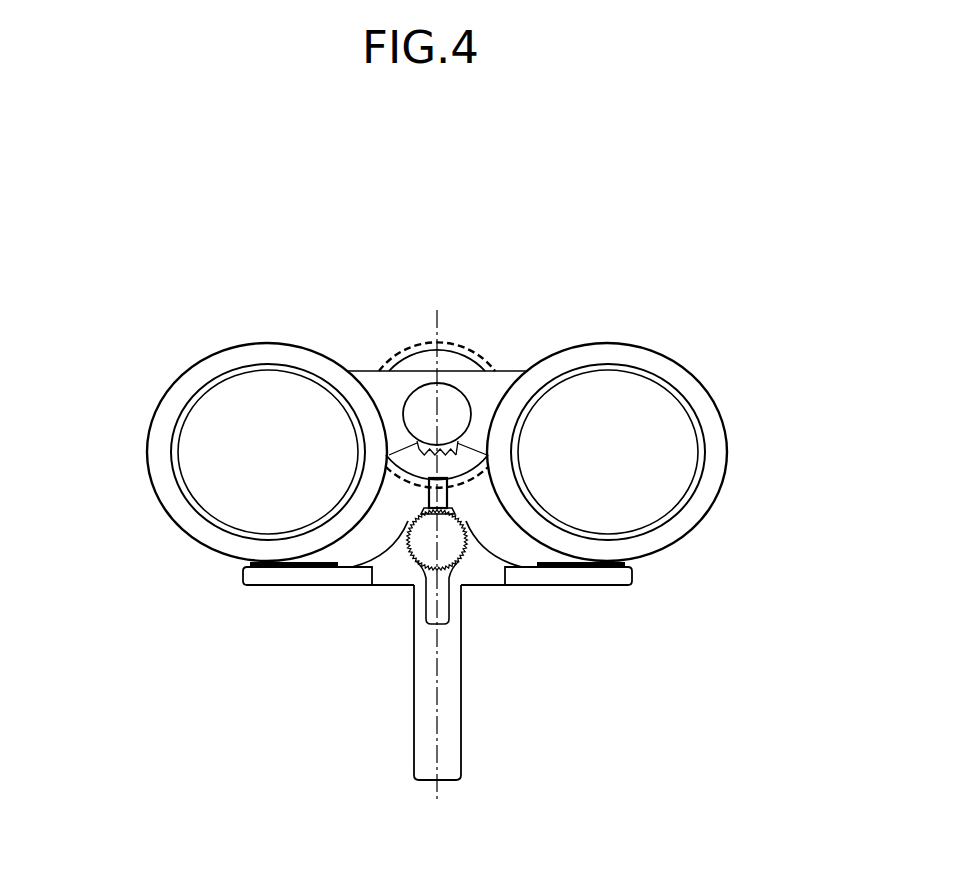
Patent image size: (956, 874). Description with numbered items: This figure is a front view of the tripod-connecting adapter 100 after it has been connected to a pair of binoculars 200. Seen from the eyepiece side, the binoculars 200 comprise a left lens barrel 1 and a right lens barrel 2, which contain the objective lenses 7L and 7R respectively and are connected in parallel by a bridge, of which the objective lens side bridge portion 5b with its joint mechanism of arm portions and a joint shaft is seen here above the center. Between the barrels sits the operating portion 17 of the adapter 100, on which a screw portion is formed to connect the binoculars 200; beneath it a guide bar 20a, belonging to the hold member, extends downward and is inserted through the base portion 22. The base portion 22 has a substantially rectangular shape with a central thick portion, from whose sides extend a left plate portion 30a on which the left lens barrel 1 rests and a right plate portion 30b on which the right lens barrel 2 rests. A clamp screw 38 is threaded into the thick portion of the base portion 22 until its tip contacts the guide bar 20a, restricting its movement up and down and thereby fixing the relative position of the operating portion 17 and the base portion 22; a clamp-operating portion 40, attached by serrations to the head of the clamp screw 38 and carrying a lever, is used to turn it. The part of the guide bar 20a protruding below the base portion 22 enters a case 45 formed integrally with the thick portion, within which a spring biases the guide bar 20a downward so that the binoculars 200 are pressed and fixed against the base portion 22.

The pair of binoculars 200 is at (638, 295).
The left lens barrel 1 is at (727, 430).
The right lens barrel 2 is at (152, 423).
The objective lens 7L is at (680, 468).
The objective lens 7R is at (197, 455).
The objective lens side bridge portion 5b is at (373, 383).
The operating portion 17 is at (456, 438).
The guide bar 20a is at (430, 491).
The base portion 22 is at (413, 576).
The clamp screw 38 is at (428, 550).
The clamp-operating portion 40 is at (452, 586).
The left plate portion 30a is at (617, 573).
The right plate portion 30b is at (257, 577).
The case 45 is at (448, 710).
The tripod-connecting adapter 100 is at (589, 596).